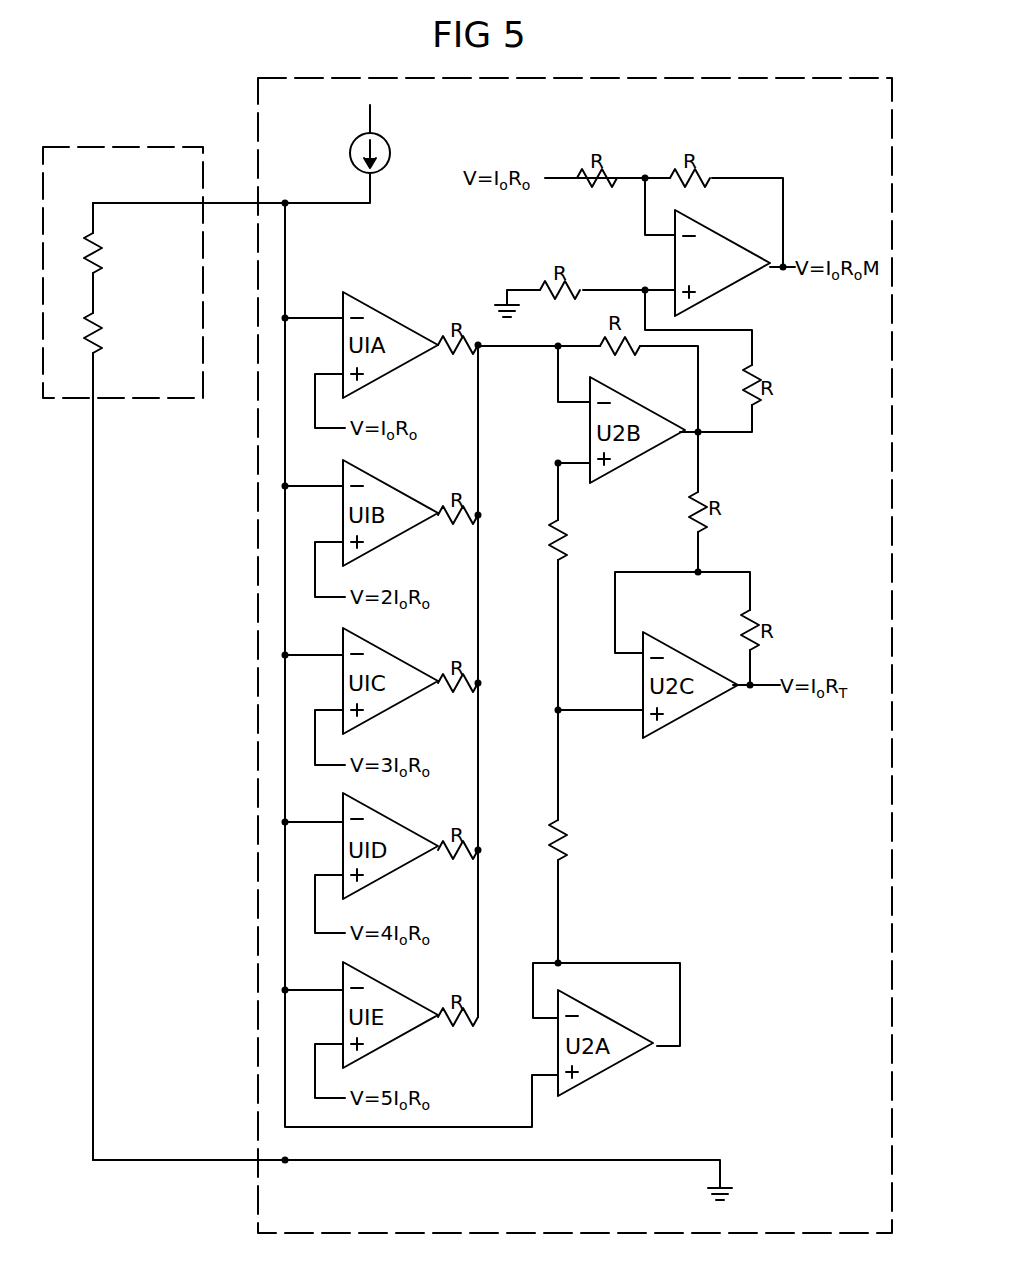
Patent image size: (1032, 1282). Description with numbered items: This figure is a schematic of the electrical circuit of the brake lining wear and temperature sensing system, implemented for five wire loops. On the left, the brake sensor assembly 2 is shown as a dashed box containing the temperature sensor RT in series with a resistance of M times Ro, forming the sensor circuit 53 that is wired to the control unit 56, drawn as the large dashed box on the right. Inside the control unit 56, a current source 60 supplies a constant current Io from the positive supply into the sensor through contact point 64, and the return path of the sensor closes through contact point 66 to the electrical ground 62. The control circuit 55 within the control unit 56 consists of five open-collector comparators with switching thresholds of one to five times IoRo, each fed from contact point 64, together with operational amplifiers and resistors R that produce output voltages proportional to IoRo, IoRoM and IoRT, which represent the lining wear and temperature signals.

The thermistor probe 2 is at (115, 145).
The sensor circuit 53 is at (93, 508).
The control unit 56 is at (705, 78).
The current source 60 is at (388, 140).
The contact point 64 is at (285, 203).
The control circuit 55 is at (558, 762).
The contact point 66 is at (285, 1160).
The electrical ground 62 is at (733, 1188).